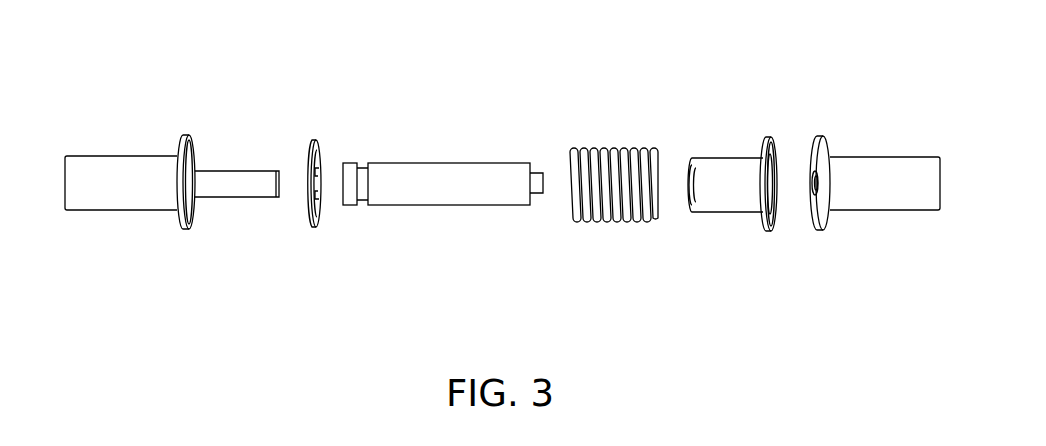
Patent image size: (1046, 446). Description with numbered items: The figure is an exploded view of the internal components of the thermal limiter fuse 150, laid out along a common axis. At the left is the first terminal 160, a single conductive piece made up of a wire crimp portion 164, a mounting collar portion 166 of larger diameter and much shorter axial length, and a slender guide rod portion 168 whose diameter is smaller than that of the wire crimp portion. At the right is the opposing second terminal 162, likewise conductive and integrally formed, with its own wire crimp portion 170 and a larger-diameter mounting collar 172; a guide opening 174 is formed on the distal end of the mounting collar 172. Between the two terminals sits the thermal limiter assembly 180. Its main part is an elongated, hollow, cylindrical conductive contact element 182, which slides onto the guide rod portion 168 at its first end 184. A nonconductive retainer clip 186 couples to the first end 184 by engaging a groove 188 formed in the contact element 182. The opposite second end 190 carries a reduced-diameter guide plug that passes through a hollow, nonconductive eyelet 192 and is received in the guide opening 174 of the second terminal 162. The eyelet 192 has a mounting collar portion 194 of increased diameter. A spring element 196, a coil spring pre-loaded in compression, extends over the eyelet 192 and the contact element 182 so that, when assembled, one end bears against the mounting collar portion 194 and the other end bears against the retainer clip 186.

The thermal limiter fuse 150 is at (943, 278).
The first terminal 160 is at (197, 120).
The second terminal 162 is at (842, 89).
The wire crimp portion 164 is at (115, 212).
The mounting collar portion 166 is at (185, 230).
The guide rod portion 168 is at (222, 170).
The wire crimp portion 170 is at (883, 211).
The mounting collar 172 is at (820, 232).
The guide opening 174 is at (812, 175).
The thermal limiter assembly 180 is at (788, 82).
The contact element 182 is at (457, 216).
The first end 184 is at (346, 163).
The retainer clip 186 is at (307, 212).
The groove 188 is at (360, 201).
The second end 190 is at (538, 195).
The eyelet 192 is at (697, 226).
The mounting collar portion 194 is at (770, 233).
The spring element 196 is at (568, 227).